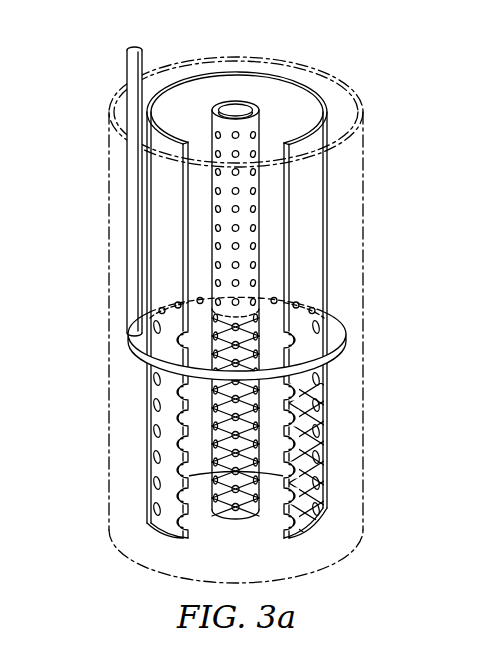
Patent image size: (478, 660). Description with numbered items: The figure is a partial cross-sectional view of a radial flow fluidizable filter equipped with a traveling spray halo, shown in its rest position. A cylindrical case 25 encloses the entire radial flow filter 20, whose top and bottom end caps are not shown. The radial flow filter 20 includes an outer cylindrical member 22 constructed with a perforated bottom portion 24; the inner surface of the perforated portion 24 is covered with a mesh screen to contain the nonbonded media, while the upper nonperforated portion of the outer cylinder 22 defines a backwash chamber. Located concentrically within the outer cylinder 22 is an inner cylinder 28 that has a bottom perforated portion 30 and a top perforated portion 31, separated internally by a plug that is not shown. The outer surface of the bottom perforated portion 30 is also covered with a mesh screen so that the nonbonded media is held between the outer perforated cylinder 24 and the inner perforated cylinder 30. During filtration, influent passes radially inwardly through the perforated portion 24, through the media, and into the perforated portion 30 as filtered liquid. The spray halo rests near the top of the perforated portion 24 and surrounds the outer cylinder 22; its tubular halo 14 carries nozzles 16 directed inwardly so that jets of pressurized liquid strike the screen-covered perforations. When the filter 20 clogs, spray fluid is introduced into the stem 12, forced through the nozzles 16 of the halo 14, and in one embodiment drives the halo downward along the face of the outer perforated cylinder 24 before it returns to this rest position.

The stem 12 is at (127, 68).
The tubular halo 14 is at (128, 341).
The nozzles 16 is at (363, 283).
The radial flow filter 20 is at (320, 51).
The outer cylindrical member 22 is at (326, 247).
The perforated bottom portion 24 is at (327, 413).
The cylindrical case 25 is at (364, 195).
The inner cylinder 28 is at (207, 124).
The bottom perforated portion 30 is at (211, 430).
The top perforated portion 31 is at (211, 213).